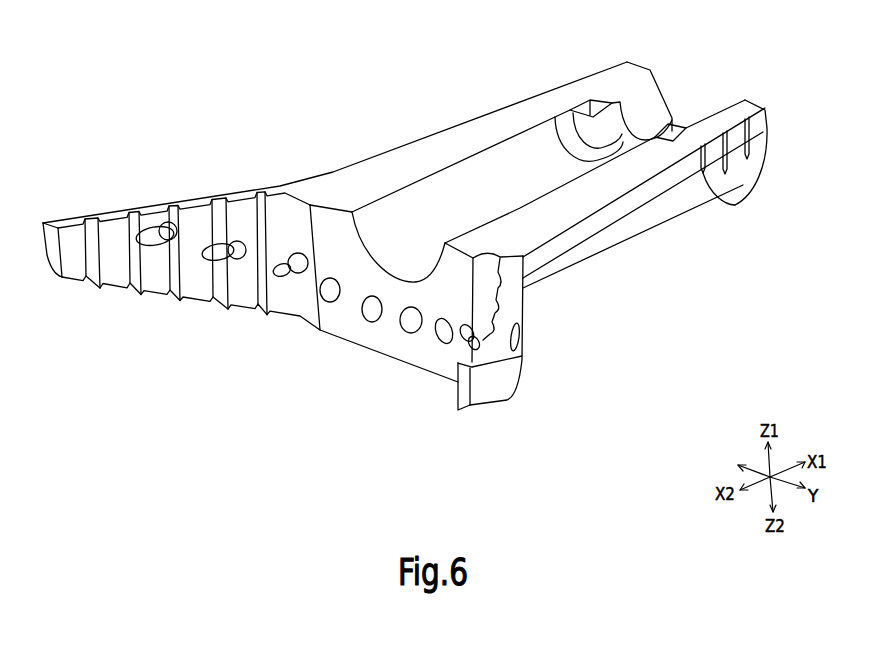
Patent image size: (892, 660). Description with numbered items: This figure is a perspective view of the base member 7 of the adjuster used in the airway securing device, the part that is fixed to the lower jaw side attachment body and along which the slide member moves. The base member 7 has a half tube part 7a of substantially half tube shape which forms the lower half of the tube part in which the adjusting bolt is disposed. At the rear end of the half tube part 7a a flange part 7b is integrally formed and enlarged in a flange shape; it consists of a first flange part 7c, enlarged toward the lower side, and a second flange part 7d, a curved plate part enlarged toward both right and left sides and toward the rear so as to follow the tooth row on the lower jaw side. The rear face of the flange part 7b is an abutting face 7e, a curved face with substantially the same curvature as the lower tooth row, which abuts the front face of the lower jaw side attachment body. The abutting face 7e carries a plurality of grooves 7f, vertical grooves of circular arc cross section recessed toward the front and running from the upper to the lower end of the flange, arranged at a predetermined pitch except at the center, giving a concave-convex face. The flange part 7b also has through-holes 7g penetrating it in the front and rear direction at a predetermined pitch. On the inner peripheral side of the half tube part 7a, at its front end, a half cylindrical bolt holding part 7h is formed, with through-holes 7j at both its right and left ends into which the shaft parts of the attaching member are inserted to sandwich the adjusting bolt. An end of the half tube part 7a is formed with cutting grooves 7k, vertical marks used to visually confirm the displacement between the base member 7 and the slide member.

The base member 7 is at (130, 78).
The half tube part 7a is at (441, 130).
The flange part 7b is at (222, 324).
The first flange part 7c is at (386, 358).
The second flange part 7d is at (68, 217).
The abutting face 7e is at (328, 222).
The grooves 7f is at (130, 283).
The through-holes 7g is at (170, 222).
The bolt holding part 7h is at (632, 112).
The through-holes 7j is at (582, 105).
The cutting grooves 7k is at (747, 159).